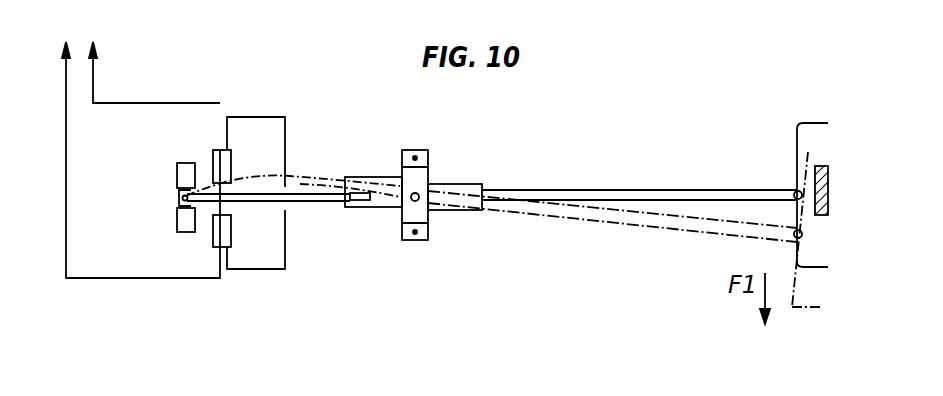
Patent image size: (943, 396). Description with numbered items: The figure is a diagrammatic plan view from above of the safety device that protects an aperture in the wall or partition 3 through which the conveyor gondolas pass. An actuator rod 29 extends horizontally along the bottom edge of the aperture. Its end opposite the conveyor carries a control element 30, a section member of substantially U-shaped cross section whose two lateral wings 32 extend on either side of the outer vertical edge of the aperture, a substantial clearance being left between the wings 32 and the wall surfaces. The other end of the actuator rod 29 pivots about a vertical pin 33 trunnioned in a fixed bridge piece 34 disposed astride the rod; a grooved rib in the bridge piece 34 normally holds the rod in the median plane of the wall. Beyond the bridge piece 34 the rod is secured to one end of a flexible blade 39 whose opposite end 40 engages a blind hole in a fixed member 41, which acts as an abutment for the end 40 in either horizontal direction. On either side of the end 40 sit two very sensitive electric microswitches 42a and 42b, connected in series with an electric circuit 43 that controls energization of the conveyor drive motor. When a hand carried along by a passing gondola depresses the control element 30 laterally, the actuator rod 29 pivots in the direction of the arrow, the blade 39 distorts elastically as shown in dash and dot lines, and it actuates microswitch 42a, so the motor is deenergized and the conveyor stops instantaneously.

The wall or partition 3 is at (822, 165).
The actuator rod 29 is at (619, 190).
The control element 30 is at (796, 153).
The lateral wings 32 is at (813, 122).
The vertical pin 33 is at (418, 201).
The fixed bridge piece 34 is at (420, 177).
The flexible blade 39 is at (307, 193).
The blade end 40 is at (202, 192).
The fixed member 41 is at (178, 200).
The electric microswitch 42a is at (232, 163).
The electric microswitch 42b is at (232, 237).
The electric circuit 43 is at (137, 103).